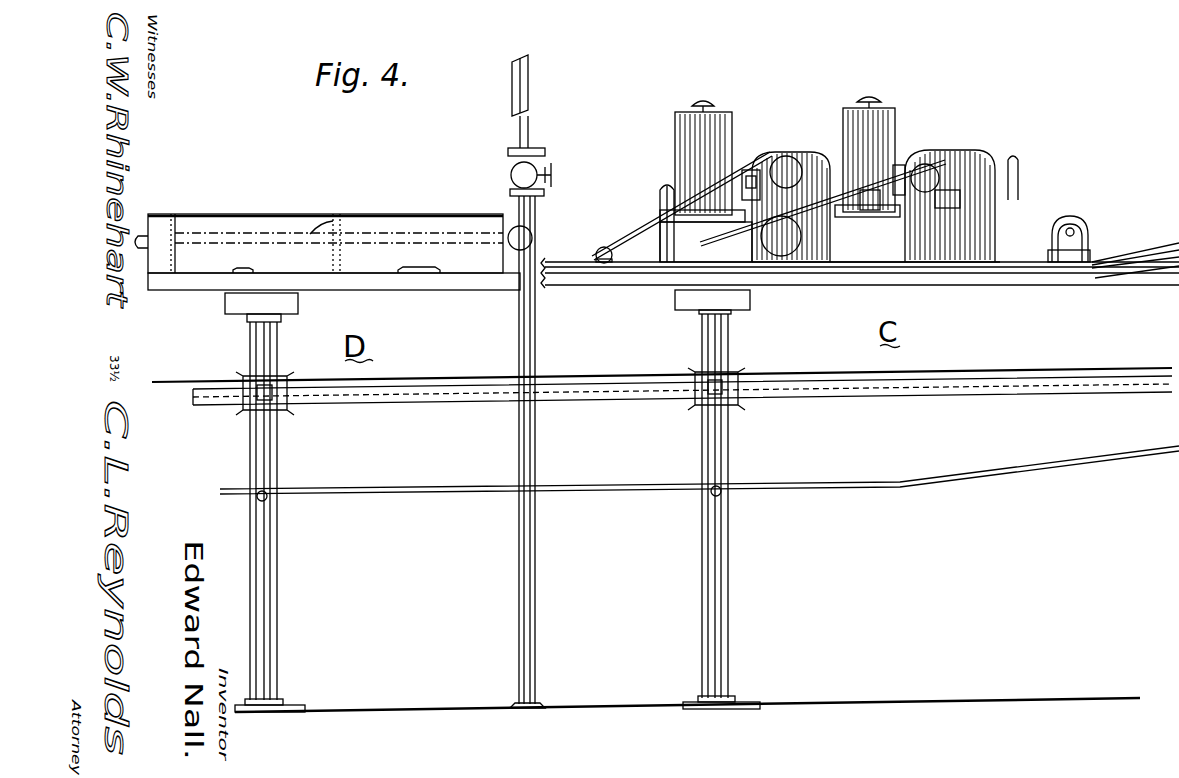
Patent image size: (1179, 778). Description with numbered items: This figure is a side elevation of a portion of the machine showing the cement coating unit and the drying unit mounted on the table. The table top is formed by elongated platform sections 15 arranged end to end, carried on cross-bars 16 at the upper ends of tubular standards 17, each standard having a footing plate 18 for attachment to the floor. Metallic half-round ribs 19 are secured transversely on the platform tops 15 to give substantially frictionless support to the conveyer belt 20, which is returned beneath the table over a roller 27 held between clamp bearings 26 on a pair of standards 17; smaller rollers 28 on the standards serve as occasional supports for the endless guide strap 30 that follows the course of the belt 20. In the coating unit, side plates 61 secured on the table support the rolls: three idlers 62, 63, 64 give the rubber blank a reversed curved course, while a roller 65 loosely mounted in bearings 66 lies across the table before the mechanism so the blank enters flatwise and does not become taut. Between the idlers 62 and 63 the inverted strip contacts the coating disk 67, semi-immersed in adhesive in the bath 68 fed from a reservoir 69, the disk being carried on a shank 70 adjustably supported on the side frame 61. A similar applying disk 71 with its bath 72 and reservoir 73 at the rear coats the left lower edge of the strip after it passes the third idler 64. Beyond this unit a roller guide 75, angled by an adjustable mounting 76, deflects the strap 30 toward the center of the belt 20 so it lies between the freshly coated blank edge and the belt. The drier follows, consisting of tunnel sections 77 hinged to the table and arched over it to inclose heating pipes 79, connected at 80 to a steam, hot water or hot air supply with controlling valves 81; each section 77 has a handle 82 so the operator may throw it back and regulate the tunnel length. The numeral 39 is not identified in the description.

The platform section 15 is at (500, 291).
The cross-bar 16 is at (226, 310).
The tubular standard 17 is at (278, 340).
The footing plate 18 is at (302, 705).
The half-round rib 19 is at (1170, 264).
The conveyer belt 20 is at (617, 380).
The clamp bearing 26 is at (284, 411).
The roller 27 is at (244, 417).
The smaller roller 28 is at (285, 490).
The endless guide strap 30 is at (643, 261).
The rail 39 is at (384, 406).
The side plate 61 is at (985, 205).
The idler 62 is at (760, 238).
The idler 63 is at (966, 150).
The idler 64 is at (790, 160).
The roller 65 is at (1071, 227).
The bearing 66 is at (1052, 245).
The coating disk 67 is at (905, 175).
The bath 68 is at (880, 270).
The reservoir 69 is at (895, 118).
The shank 70 is at (938, 176).
The applying disk 71 is at (752, 178).
The bath 72 is at (745, 216).
The reservoir 73 is at (698, 142).
The roller guide 75 is at (620, 246).
The adjustable mounting 76 is at (596, 252).
The tunnel section 77 is at (172, 214).
The heating pipe 79 is at (340, 214).
The connection 80 is at (519, 432).
The controlling valve 81 is at (552, 172).
The handle 82 is at (246, 274).